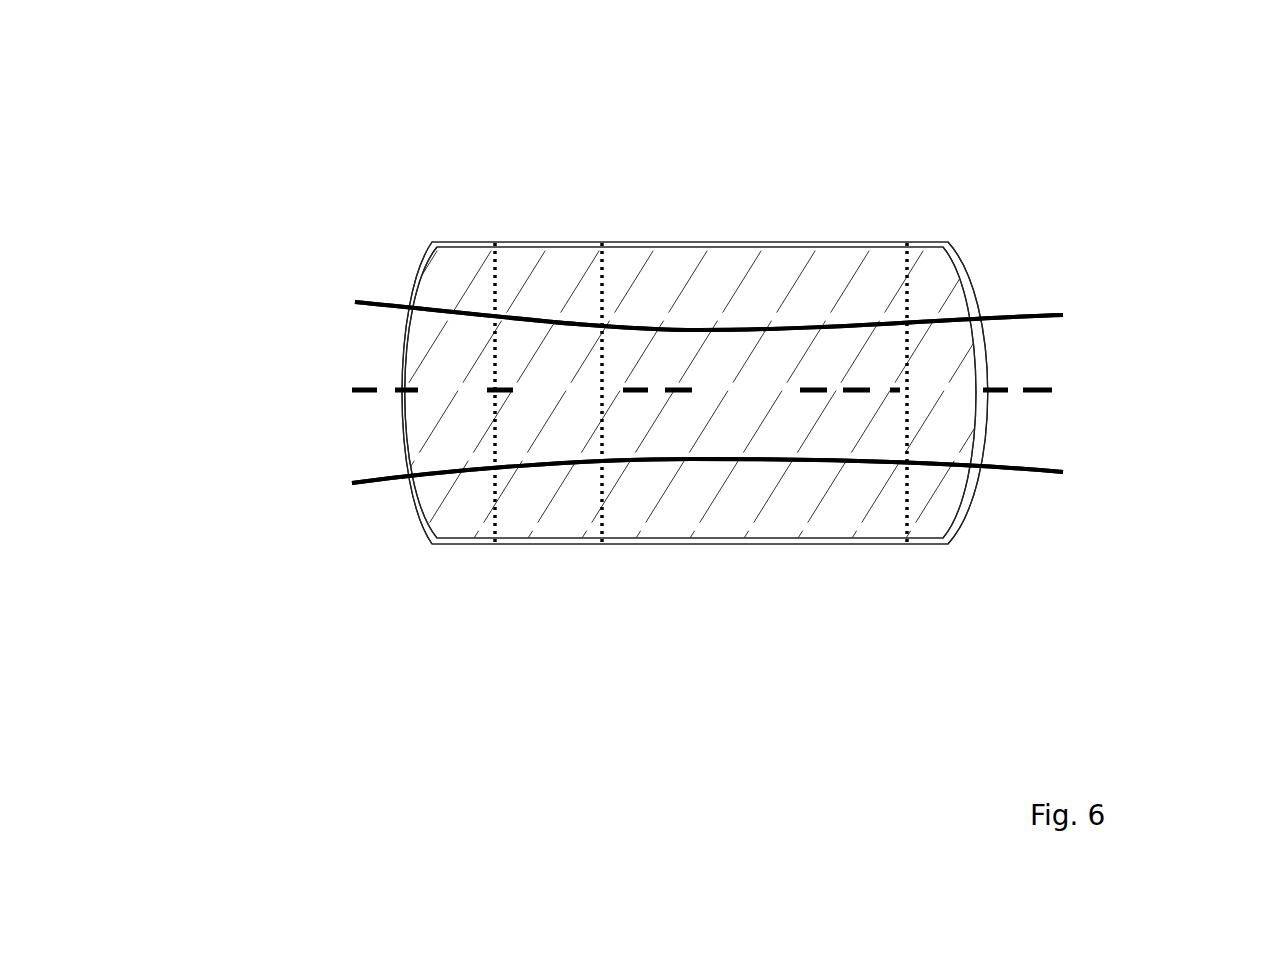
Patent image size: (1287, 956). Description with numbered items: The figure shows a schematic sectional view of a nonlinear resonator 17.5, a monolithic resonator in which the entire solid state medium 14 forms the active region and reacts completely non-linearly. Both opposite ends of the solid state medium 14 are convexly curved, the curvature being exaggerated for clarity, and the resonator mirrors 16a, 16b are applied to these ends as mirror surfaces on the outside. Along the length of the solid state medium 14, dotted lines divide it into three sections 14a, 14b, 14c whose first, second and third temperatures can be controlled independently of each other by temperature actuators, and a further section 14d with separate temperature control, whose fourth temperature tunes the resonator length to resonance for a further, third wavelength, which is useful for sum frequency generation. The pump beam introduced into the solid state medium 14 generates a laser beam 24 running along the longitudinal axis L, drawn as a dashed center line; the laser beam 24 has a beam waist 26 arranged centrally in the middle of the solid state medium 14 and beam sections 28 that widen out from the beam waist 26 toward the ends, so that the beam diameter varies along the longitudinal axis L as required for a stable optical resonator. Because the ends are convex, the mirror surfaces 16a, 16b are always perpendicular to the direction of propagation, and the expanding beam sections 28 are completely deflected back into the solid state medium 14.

The nonlinear resonator 17.5 is at (580, 167).
The solid state medium 14 is at (712, 287).
The first section of the solid state medium 14a is at (440, 350).
The second section of the solid state medium 14b is at (778, 358).
The third section of the solid state medium 14c is at (938, 435).
The further section of the solid state medium 14d is at (535, 420).
The resonator mirror 16a is at (432, 497).
The resonator mirror 16b is at (958, 303).
The laser beam 24 is at (355, 302).
The beam waist 26 is at (748, 458).
The beam sections 28 is at (1060, 368).
The longitudinal axis L is at (716, 414).